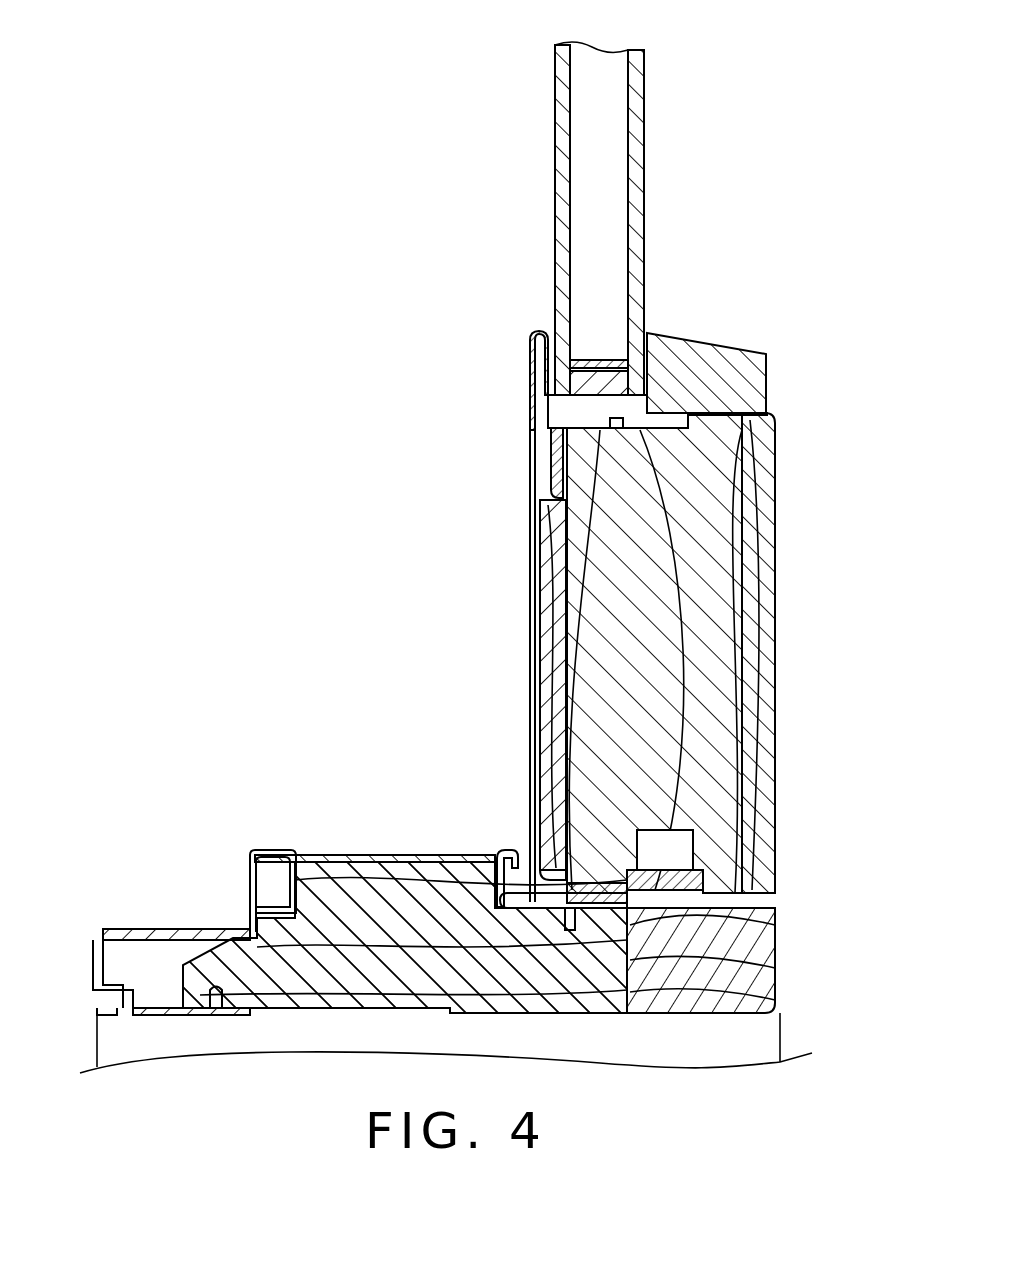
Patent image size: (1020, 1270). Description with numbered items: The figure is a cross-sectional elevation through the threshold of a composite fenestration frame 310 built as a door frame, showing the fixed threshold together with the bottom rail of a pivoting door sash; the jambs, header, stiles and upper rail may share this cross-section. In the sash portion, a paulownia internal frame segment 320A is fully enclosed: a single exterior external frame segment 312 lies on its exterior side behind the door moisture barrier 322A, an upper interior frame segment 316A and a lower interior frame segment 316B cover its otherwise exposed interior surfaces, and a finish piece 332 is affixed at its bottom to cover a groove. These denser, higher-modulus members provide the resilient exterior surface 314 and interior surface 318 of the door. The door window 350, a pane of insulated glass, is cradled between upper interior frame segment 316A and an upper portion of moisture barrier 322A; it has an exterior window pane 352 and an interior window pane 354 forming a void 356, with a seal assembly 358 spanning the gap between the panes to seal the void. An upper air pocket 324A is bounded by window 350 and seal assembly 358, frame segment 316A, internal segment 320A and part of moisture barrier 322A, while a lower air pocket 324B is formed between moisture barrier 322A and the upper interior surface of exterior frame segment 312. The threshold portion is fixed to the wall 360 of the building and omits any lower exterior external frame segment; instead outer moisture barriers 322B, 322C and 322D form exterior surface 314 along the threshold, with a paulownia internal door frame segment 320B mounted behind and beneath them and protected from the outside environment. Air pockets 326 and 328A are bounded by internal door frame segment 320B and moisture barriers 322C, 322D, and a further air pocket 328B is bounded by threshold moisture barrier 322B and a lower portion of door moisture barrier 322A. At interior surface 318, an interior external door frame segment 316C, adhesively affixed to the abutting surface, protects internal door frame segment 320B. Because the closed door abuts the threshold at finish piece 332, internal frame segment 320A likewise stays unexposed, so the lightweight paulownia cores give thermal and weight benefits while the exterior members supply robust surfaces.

The composite fenestration frame 310 is at (432, 561).
The exterior external frame segment 312 is at (540, 690).
The exterior surface 314 is at (583, 616).
The upper interior frame segment 316A is at (700, 345).
The lower interior frame segment 316B is at (760, 655).
The interior external door frame segment 316C is at (780, 930).
The interior surface 318 is at (432, 678).
The internal frame segment 320A is at (715, 507).
The internal door frame segment 320B is at (508, 1012).
The door moisture barrier 322A is at (540, 388).
The moisture barrier 322B is at (500, 873).
The moisture barrier 322C is at (385, 855).
The moisture barrier 322D is at (95, 935).
The upper air pocket 324A is at (563, 411).
The lower air pocket 324B is at (546, 463).
The air pocket 326 is at (168, 953).
The air pocket 328A is at (277, 883).
The air pocket 328B is at (514, 877).
The finish piece 332 is at (700, 880).
The door window 350 is at (588, 200).
The exterior window pane 352 is at (555, 175).
The interior window pane 354 is at (640, 140).
The void 356 is at (602, 72).
The seal assembly 358 is at (606, 352).
The wall 360 is at (97, 1043).